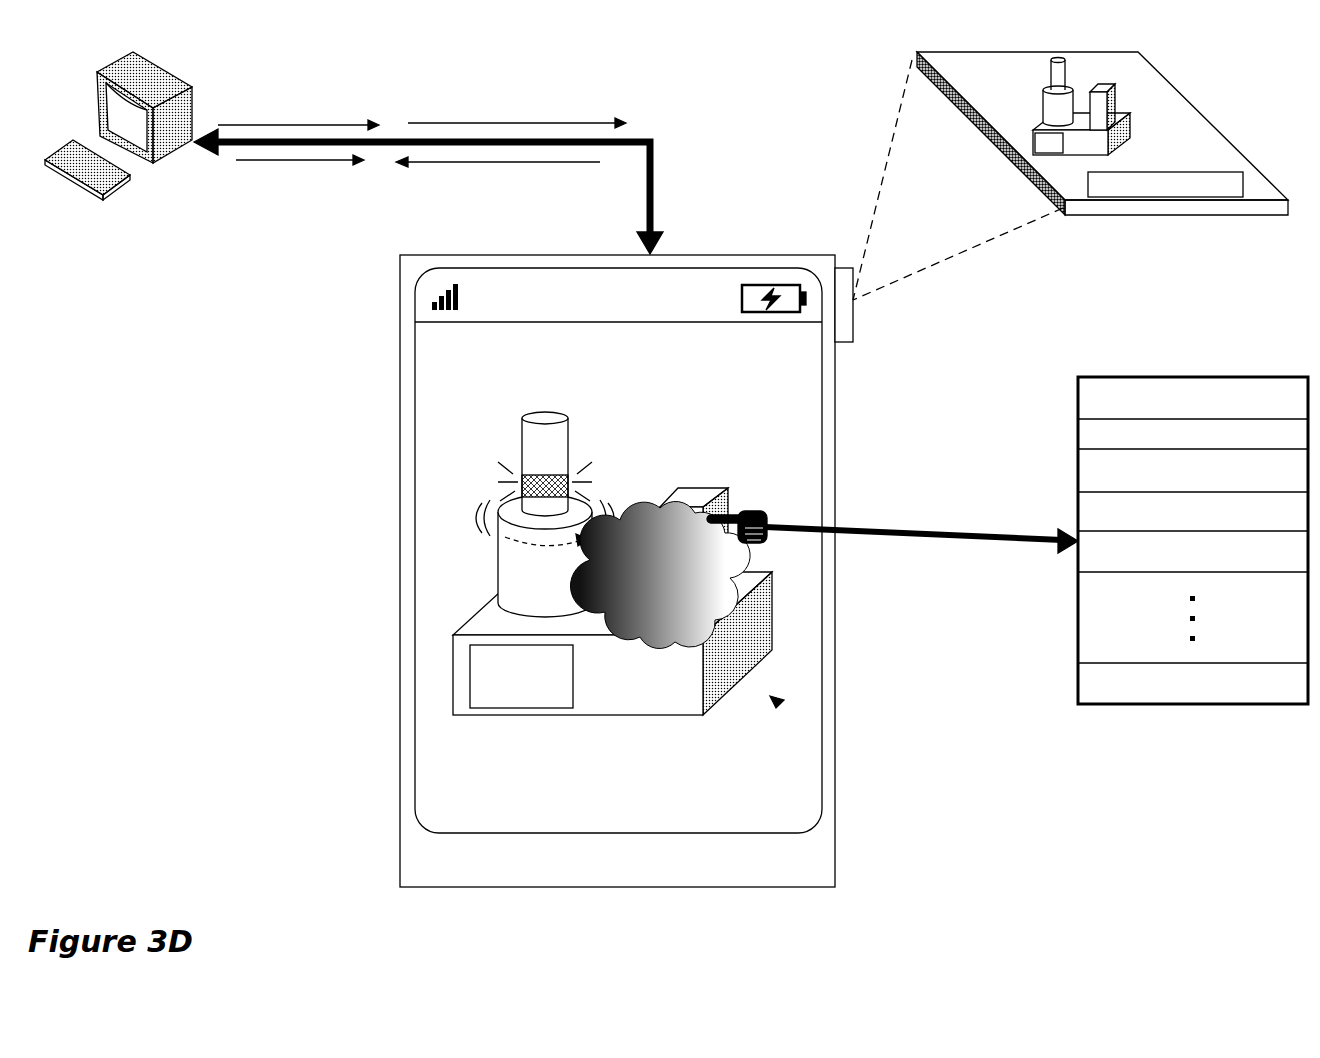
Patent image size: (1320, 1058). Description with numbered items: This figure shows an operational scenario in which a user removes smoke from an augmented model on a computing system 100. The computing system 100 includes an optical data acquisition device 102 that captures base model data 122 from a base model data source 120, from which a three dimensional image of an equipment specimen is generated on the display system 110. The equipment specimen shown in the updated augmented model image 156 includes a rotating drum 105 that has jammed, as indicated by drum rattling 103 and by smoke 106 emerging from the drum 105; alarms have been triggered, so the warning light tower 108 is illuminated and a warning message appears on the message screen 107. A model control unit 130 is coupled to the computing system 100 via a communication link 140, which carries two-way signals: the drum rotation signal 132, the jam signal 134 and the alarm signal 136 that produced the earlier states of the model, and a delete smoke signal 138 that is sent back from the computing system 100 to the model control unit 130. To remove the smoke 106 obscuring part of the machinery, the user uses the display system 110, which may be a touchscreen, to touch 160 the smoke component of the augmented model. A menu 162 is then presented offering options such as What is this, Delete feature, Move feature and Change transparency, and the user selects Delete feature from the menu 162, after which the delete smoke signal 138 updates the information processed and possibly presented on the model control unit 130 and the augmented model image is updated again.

The computing system 100 is at (617, 571).
The optical data acquisition device 102 is at (845, 343).
The drum rattling 103 is at (480, 508).
The rotating drum 105 is at (500, 560).
The smoke 106 is at (680, 598).
The message screen 107 is at (470, 677).
The warning light tower 108 is at (520, 440).
The display system 110 is at (618, 550).
The base model data source 120 is at (1173, 215).
The base model data 122 is at (1163, 172).
The model control unit 130 is at (103, 198).
The drum rotation signal 132 is at (517, 101).
The jam signal 134 is at (300, 183).
The alarm signal 136 is at (298, 103).
The delete smoke signal 138 is at (498, 184).
The communication link 140 is at (656, 200).
The updated augmented model image 156 is at (780, 704).
The touch 160 is at (760, 515).
The menu 162 is at (1185, 704).